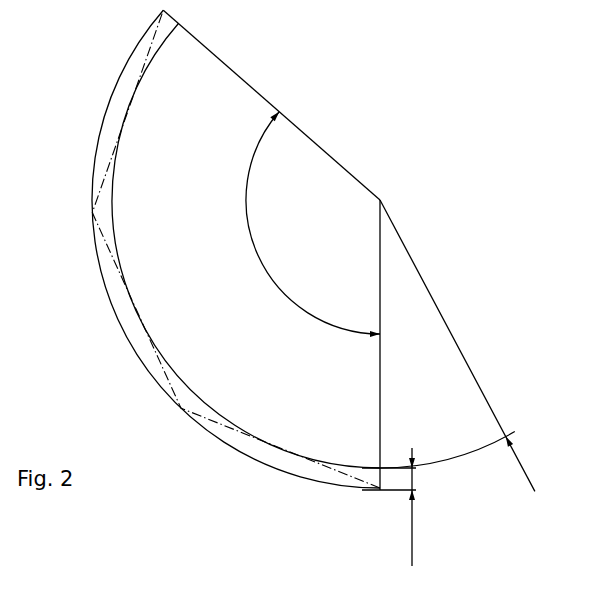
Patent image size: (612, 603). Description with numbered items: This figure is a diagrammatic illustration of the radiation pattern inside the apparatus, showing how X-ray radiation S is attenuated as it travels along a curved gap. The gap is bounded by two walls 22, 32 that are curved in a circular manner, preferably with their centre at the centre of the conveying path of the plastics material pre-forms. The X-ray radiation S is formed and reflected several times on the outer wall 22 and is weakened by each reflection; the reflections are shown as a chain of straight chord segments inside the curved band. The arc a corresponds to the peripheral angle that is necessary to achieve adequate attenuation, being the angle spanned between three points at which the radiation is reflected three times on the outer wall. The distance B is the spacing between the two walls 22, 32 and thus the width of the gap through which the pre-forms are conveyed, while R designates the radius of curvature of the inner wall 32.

The outer wall 22 is at (220, 440).
The inner wall 32 is at (205, 403).
The X-ray radiation S is at (150, 47).
The arc a is at (313, 224).
The radius of curvature R is at (464, 455).
The distance between the two walls B is at (389, 507).